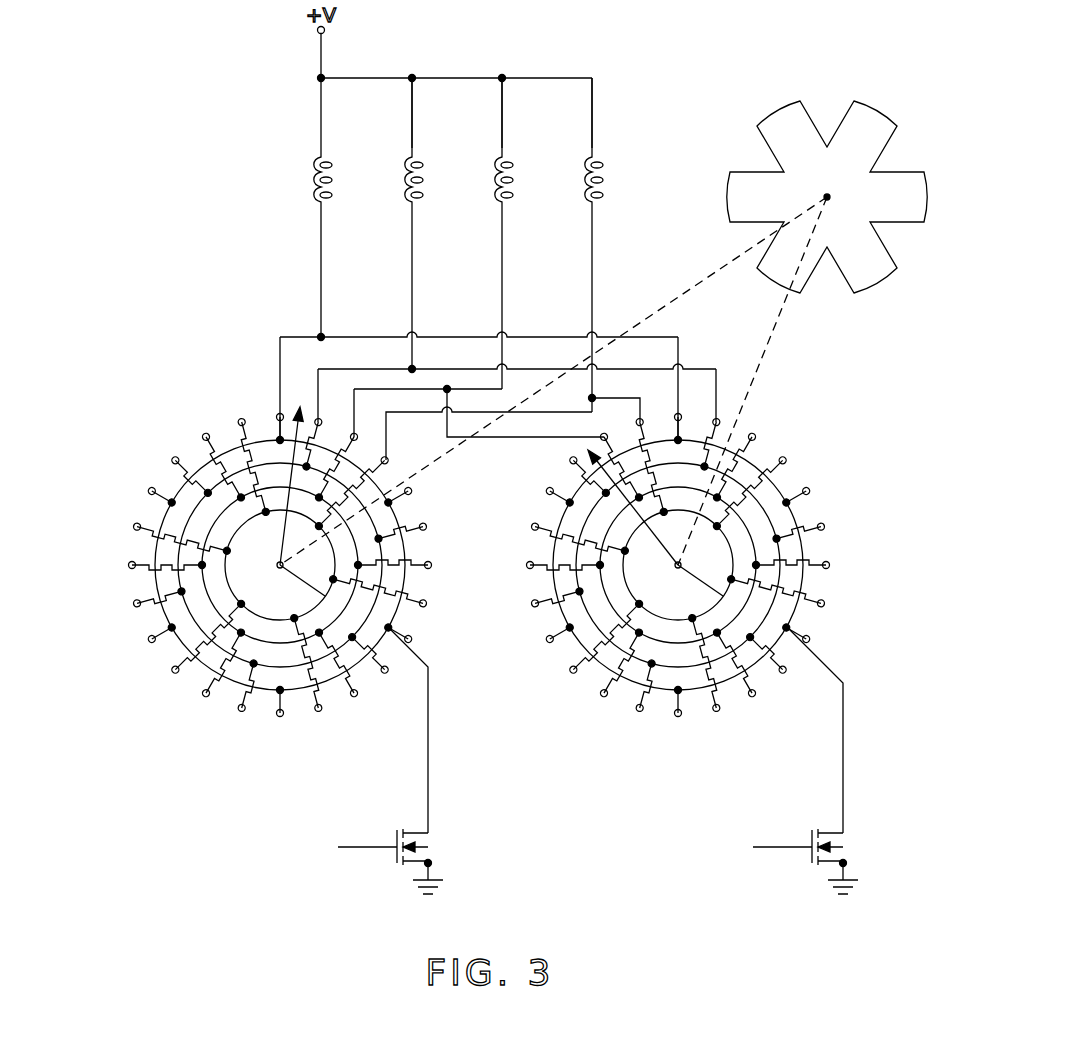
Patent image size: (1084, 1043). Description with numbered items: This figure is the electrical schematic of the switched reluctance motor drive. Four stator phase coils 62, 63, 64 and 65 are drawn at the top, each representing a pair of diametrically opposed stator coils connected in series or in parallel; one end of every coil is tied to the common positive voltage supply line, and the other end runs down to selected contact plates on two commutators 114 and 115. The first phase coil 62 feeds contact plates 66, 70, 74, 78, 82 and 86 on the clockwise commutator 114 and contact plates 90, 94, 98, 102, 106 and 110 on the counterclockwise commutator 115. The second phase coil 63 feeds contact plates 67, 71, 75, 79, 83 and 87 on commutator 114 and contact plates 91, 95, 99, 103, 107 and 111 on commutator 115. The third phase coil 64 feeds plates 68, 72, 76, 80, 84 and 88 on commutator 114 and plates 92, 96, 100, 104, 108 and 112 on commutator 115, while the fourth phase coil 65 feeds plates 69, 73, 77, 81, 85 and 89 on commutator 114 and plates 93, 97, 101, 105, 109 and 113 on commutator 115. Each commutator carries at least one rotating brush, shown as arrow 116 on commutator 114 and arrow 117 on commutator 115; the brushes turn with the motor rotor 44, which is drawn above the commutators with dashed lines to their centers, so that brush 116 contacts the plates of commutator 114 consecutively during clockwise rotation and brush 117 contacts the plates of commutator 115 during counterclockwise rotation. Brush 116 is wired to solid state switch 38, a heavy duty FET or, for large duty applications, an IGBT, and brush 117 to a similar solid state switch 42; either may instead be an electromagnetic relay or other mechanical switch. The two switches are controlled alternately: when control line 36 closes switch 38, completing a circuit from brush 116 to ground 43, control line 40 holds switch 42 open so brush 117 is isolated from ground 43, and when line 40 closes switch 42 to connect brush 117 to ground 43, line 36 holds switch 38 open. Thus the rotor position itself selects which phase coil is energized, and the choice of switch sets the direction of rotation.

The control line 36 is at (362, 850).
The solid state switch 38 is at (395, 838).
The control line 40 is at (778, 847).
The solid state switch 42 is at (810, 838).
The ground 43 is at (432, 878).
The rotor 44 is at (755, 160).
The first phase coil 62 is at (310, 185).
The second phase coil 63 is at (401, 185).
The third phase coil 64 is at (491, 185).
The fourth phase coil 65 is at (581, 185).
The contact plate 66 is at (280, 417).
The contact plate 67 is at (318, 422).
The contact plate 68 is at (354, 437).
The contact plate 69 is at (385, 460).
The contact plate 70 is at (408, 491).
The contact plate 71 is at (423, 527).
The contact plate 72 is at (428, 565).
The contact plate 73 is at (423, 603).
The contact plate 74 is at (408, 639).
The contact plate 75 is at (385, 670).
The contact plate 76 is at (354, 693).
The contact plate 77 is at (318, 708).
The contact plate 78 is at (280, 713).
The contact plate 79 is at (242, 708).
The contact plate 80 is at (206, 693).
The contact plate 81 is at (175, 670).
The contact plate 82 is at (152, 639).
The contact plate 83 is at (137, 603).
The contact plate 84 is at (132, 565).
The contact plate 85 is at (137, 527).
The contact plate 86 is at (152, 491).
The contact plate 87 is at (175, 460).
The contact plate 88 is at (206, 437).
The contact plate 89 is at (242, 422).
The contact plate 90 is at (678, 417).
The contact plate 91 is at (716, 422).
The contact plate 92 is at (752, 437).
The contact plate 93 is at (783, 460).
The contact plate 94 is at (806, 491).
The contact plate 95 is at (821, 527).
The contact plate 96 is at (826, 565).
The contact plate 97 is at (821, 603).
The contact plate 98 is at (806, 639).
The contact plate 99 is at (783, 670).
The contact plate 100 is at (752, 693).
The contact plate 101 is at (716, 708).
The contact plate 102 is at (678, 713).
The contact plate 103 is at (640, 708).
The contact plate 104 is at (604, 693).
The contact plate 105 is at (573, 670).
The contact plate 106 is at (550, 639).
The contact plate 107 is at (535, 603).
The contact plate 108 is at (530, 565).
The contact plate 109 is at (535, 527).
The contact plate 110 is at (550, 491).
The contact plate 111 is at (573, 460).
The contact plate 112 is at (604, 437).
The contact plate 113 is at (640, 422).
The commutator 114 is at (138, 422).
The commutator 115 is at (837, 440).
The rotating brush 116 is at (293, 432).
The rotating brush 117 is at (655, 545).